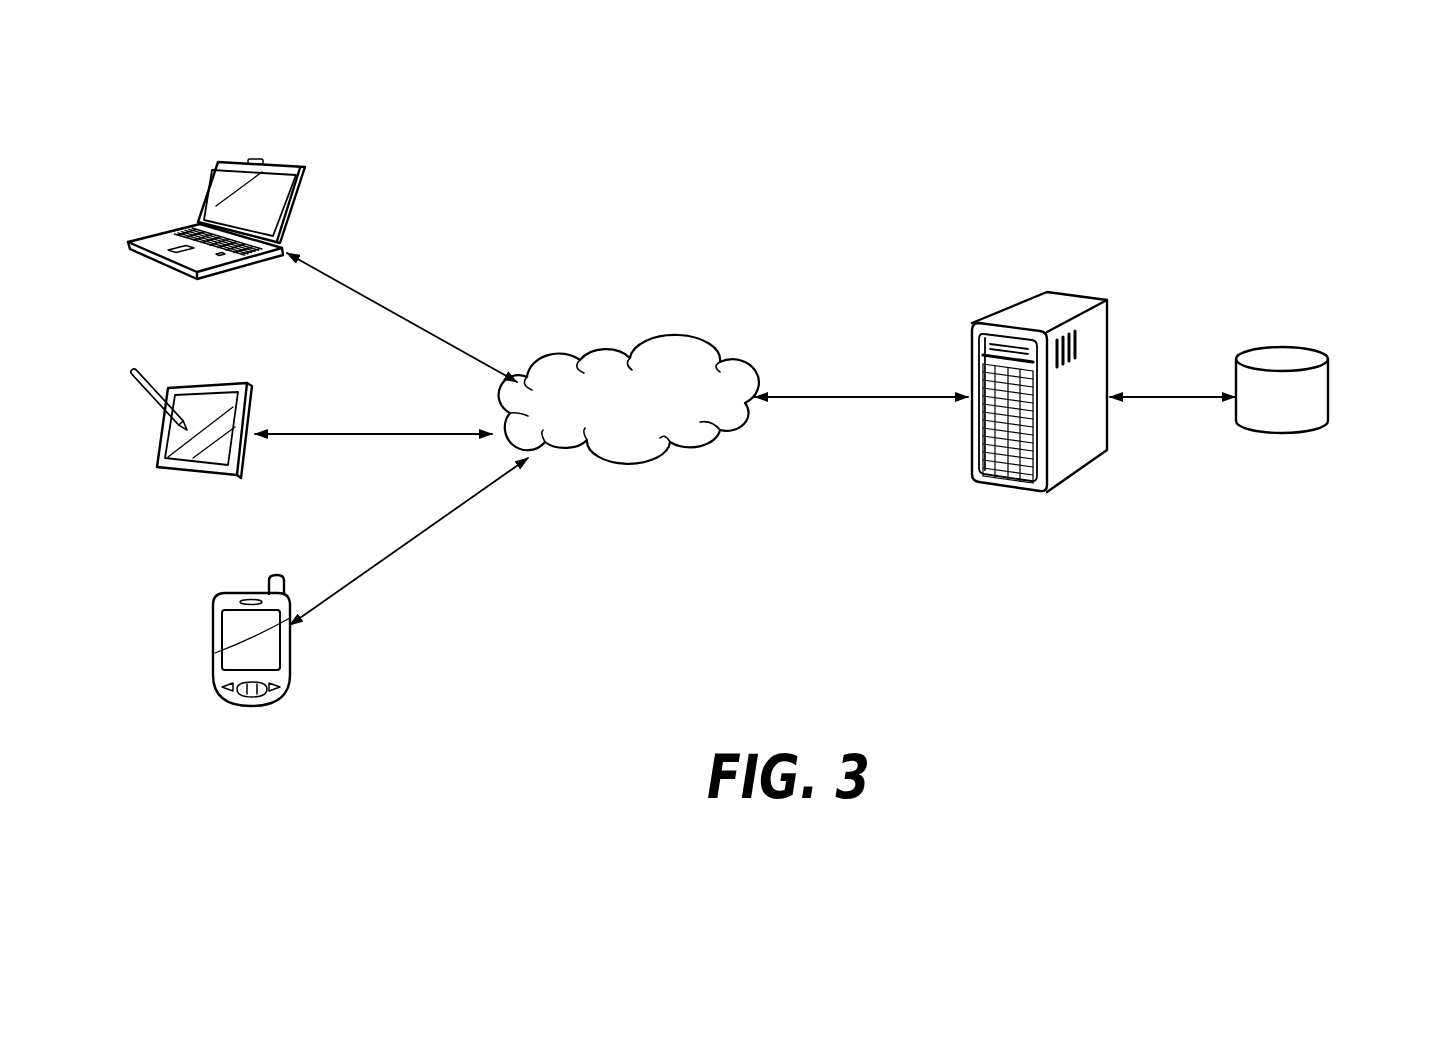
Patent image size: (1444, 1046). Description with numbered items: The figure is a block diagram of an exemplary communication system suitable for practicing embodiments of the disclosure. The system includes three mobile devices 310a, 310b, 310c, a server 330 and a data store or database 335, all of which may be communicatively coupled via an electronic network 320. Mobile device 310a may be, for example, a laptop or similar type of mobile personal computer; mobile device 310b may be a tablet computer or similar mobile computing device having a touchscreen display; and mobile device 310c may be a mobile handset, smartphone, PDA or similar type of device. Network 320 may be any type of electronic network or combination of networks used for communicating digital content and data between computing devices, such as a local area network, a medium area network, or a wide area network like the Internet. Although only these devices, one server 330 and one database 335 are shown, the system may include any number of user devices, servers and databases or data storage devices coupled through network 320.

The mobile device 310a is at (300, 166).
The mobile device 310b is at (247, 384).
The mobile device 310c is at (290, 650).
The electronic network 320 is at (720, 362).
The server 330 is at (1103, 318).
The database 335 is at (1323, 381).